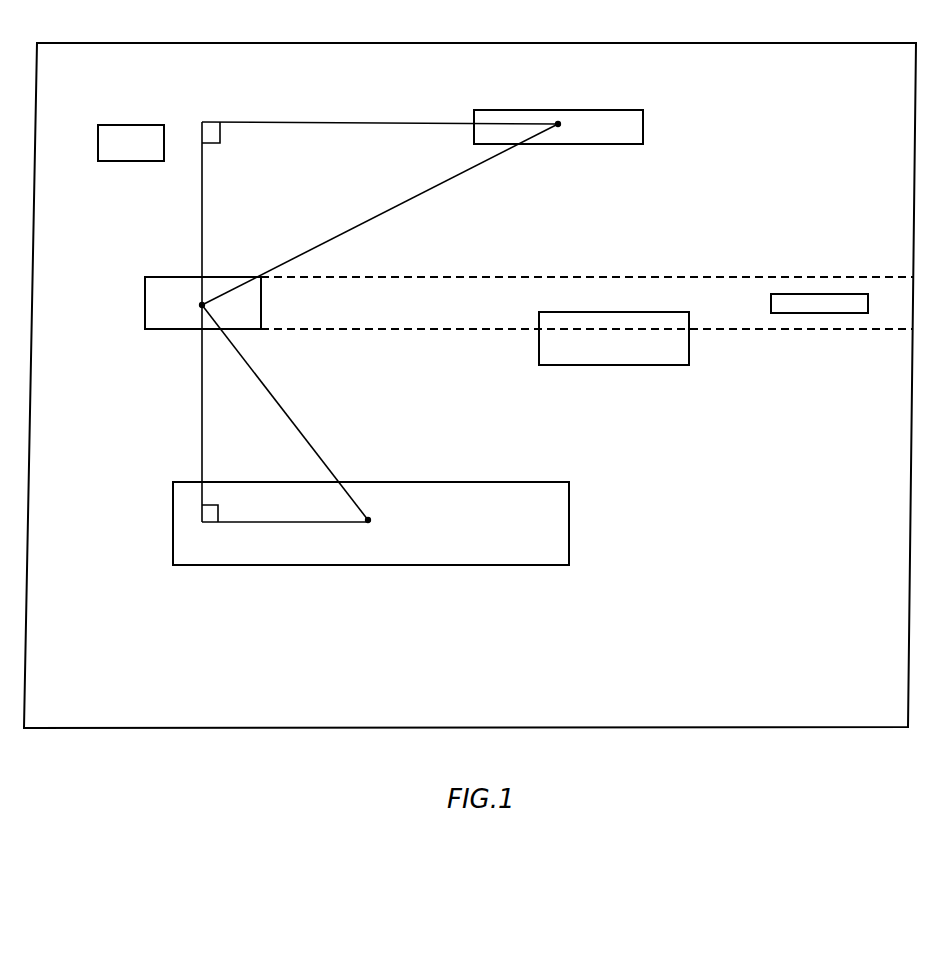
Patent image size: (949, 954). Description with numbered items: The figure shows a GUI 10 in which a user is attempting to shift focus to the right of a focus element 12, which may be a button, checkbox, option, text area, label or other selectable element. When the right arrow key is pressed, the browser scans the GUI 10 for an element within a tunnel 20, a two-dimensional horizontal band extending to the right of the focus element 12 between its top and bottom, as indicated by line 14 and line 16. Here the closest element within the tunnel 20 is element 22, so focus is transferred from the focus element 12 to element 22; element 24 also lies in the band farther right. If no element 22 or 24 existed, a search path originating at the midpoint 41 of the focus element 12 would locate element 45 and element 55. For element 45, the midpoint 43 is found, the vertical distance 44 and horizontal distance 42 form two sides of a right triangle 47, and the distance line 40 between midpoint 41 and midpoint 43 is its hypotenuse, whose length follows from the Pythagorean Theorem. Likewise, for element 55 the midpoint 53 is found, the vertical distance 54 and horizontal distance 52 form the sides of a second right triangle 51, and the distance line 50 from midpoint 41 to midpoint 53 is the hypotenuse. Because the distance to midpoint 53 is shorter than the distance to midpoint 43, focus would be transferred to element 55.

The GUI 10 is at (288, 43).
The focus element 12 is at (215, 277).
The line 14 is at (378, 277).
The line 16 is at (380, 329).
The tunnel 20 is at (448, 292).
The element 22 is at (604, 365).
The element 24 is at (812, 313).
The distance line 40 is at (449, 178).
The midpoint 41 is at (202, 305).
The horizontal distance 42 is at (368, 122).
The midpoint 43 is at (558, 124).
The vertical distance 44 is at (202, 206).
The element 45 is at (617, 110).
The right triangle 47 is at (260, 160).
The distance line 50 is at (302, 437).
The angle 51 is at (270, 420).
The horizontal distance 52 is at (285, 522).
The midpoint 53 is at (368, 520).
The vertical distance 54 is at (202, 408).
The element 55 is at (478, 565).